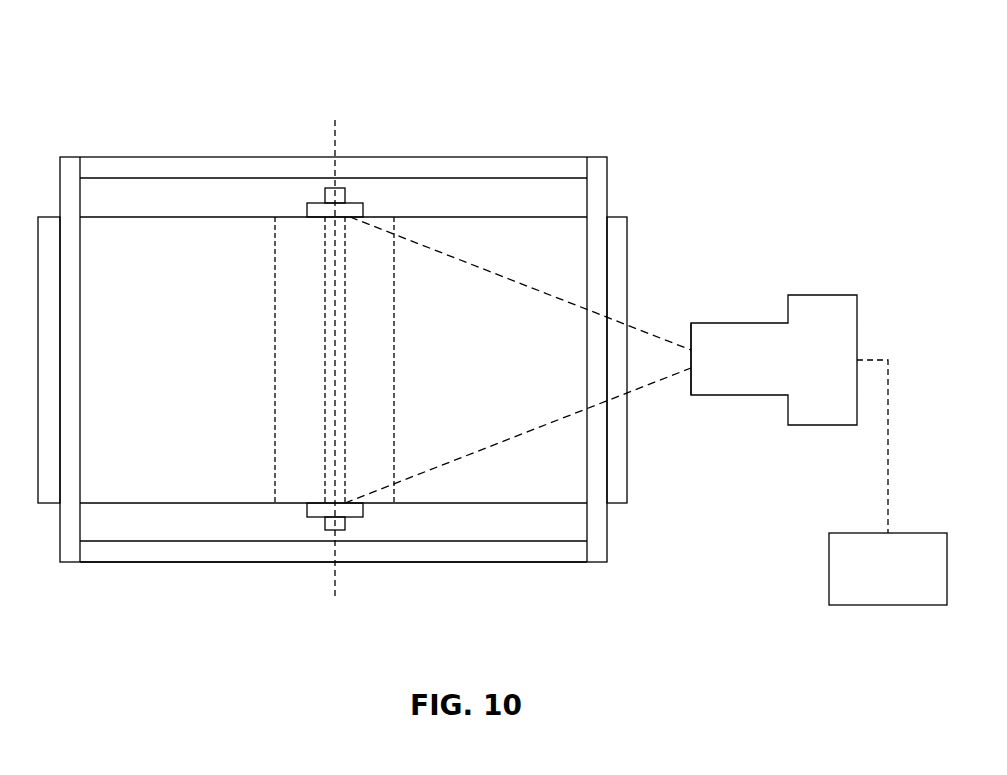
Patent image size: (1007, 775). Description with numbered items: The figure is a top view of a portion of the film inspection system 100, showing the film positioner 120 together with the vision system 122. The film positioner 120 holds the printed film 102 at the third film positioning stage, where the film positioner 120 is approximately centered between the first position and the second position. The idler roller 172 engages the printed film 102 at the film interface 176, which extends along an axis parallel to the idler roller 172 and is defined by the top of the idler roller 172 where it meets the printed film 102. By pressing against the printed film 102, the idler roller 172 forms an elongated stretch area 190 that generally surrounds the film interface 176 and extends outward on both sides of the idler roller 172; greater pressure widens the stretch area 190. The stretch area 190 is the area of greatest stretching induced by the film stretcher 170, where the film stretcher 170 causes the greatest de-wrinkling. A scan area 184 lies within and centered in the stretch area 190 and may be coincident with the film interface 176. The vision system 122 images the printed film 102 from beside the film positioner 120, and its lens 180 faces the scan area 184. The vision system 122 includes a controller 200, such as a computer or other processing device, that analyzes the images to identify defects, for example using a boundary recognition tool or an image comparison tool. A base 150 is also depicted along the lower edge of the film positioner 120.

The film inspection system 100 is at (480, 58).
The film positioner 120 is at (121, 150).
The printed film 102 is at (533, 237).
The base plate 150 is at (546, 568).
The stretch area 190 is at (275, 418).
The scan area 184 is at (325, 463).
The film interface 176 is at (333, 268).
The idler roller 172 is at (363, 510).
The film stretcher 170 is at (306, 517).
The vision system 122 is at (800, 288).
The lens 180 is at (757, 395).
The controller 200 is at (888, 605).